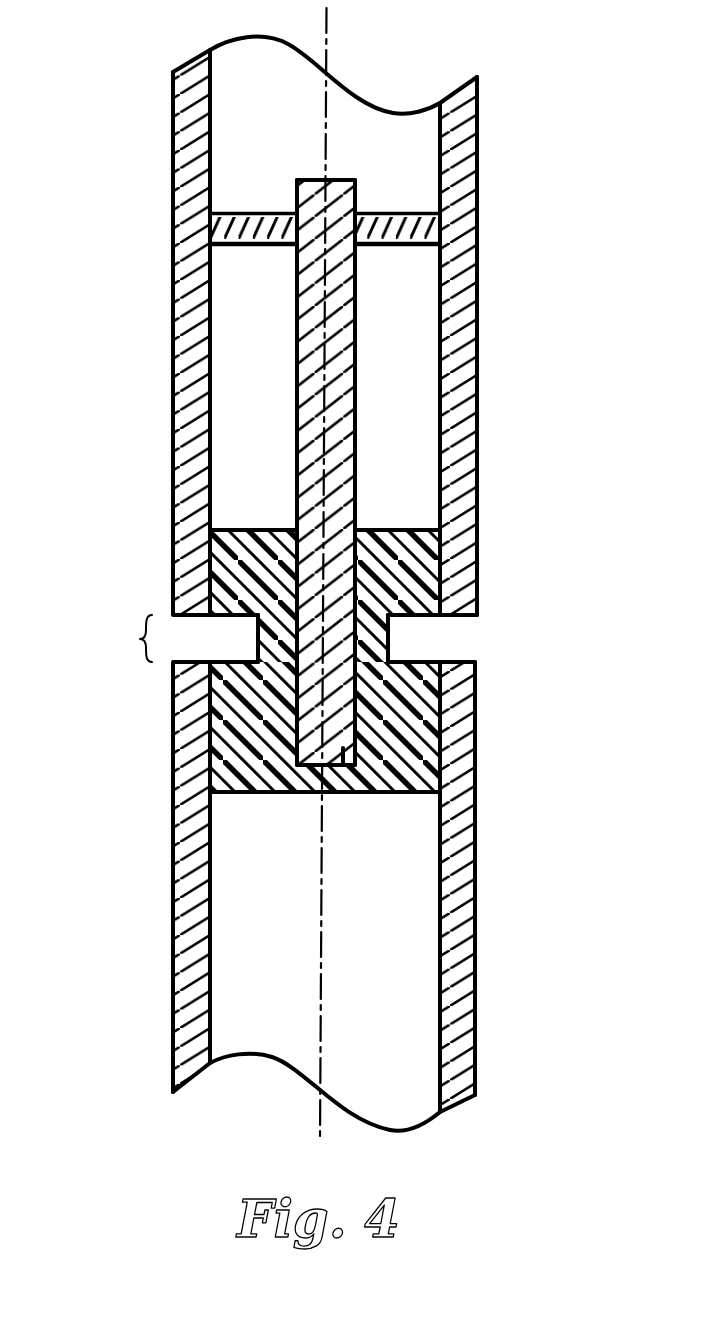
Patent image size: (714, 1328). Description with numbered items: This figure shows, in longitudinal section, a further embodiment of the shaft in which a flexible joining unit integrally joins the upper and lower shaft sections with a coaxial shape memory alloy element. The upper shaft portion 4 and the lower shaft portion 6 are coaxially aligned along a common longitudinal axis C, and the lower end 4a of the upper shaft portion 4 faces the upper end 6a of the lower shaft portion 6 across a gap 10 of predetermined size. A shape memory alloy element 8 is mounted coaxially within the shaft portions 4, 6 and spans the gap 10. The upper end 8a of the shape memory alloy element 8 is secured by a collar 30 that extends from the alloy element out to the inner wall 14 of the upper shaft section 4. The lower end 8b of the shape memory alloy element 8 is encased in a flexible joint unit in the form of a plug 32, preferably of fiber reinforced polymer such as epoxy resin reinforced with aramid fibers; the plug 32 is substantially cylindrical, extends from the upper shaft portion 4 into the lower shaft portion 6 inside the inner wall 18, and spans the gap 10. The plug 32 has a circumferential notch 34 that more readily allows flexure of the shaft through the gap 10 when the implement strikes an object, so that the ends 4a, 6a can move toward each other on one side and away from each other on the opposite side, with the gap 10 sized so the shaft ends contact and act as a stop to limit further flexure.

The upper shaft portion 4 is at (363, 326).
The lower end of the upper shaft portion 4a is at (480, 583).
The lower shaft portion 6 is at (363, 896).
The upper end of the lower shaft portion 6a is at (481, 672).
The shape memory alloy element 8 is at (360, 489).
The upper end of the shape memory alloy element 8a is at (361, 185).
The lower end of the shape memory alloy element 8b is at (340, 738).
The gap 10 is at (132, 637).
The inner wall of the upper shaft section 14 is at (438, 373).
The inner wall of the lower shaft portion 18 is at (438, 923).
The collar 30 is at (248, 212).
The plug 32 is at (383, 657).
The circumferential notch 34 is at (398, 640).
The longitudinal axis C is at (328, 27).